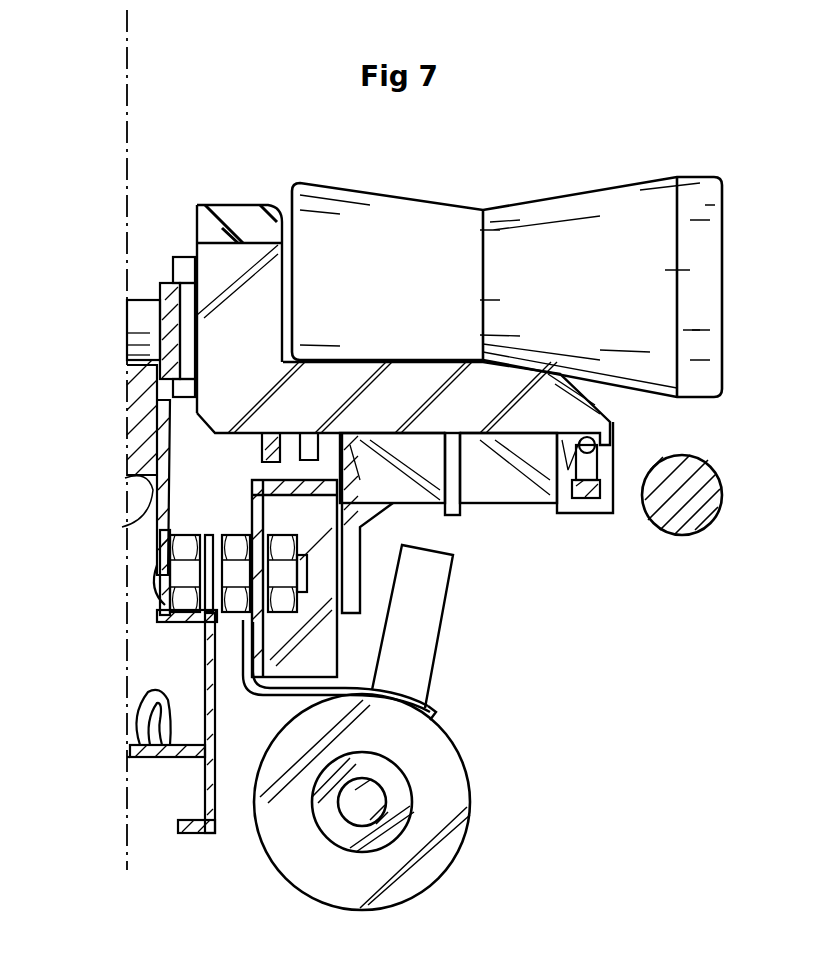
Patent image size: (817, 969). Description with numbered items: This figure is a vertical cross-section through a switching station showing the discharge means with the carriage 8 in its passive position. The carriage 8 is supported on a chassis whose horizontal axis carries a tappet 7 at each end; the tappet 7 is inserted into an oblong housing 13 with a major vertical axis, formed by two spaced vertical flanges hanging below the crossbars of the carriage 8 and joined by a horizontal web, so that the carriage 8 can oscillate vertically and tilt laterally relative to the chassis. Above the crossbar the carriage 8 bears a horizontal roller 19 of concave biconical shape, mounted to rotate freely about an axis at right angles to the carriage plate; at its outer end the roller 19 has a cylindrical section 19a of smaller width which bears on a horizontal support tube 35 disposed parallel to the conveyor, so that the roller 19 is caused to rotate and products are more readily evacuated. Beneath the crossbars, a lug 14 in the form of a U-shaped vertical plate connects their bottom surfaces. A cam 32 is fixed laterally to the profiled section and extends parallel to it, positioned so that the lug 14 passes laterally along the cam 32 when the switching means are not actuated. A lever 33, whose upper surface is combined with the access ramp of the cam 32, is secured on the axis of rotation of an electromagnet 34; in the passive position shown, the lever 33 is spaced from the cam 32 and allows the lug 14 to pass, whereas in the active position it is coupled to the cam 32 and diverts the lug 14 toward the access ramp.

The tappet 7 is at (590, 445).
The carriage 8 is at (243, 200).
The oblong housing 13 is at (588, 500).
The lug 14 is at (357, 553).
The roller 19 is at (555, 215).
The cylindrical section 19a is at (710, 225).
The cam 32 is at (250, 513).
The lever 33 is at (430, 606).
The electromagnet 34 is at (448, 775).
The horizontal support tube 35 is at (698, 478).